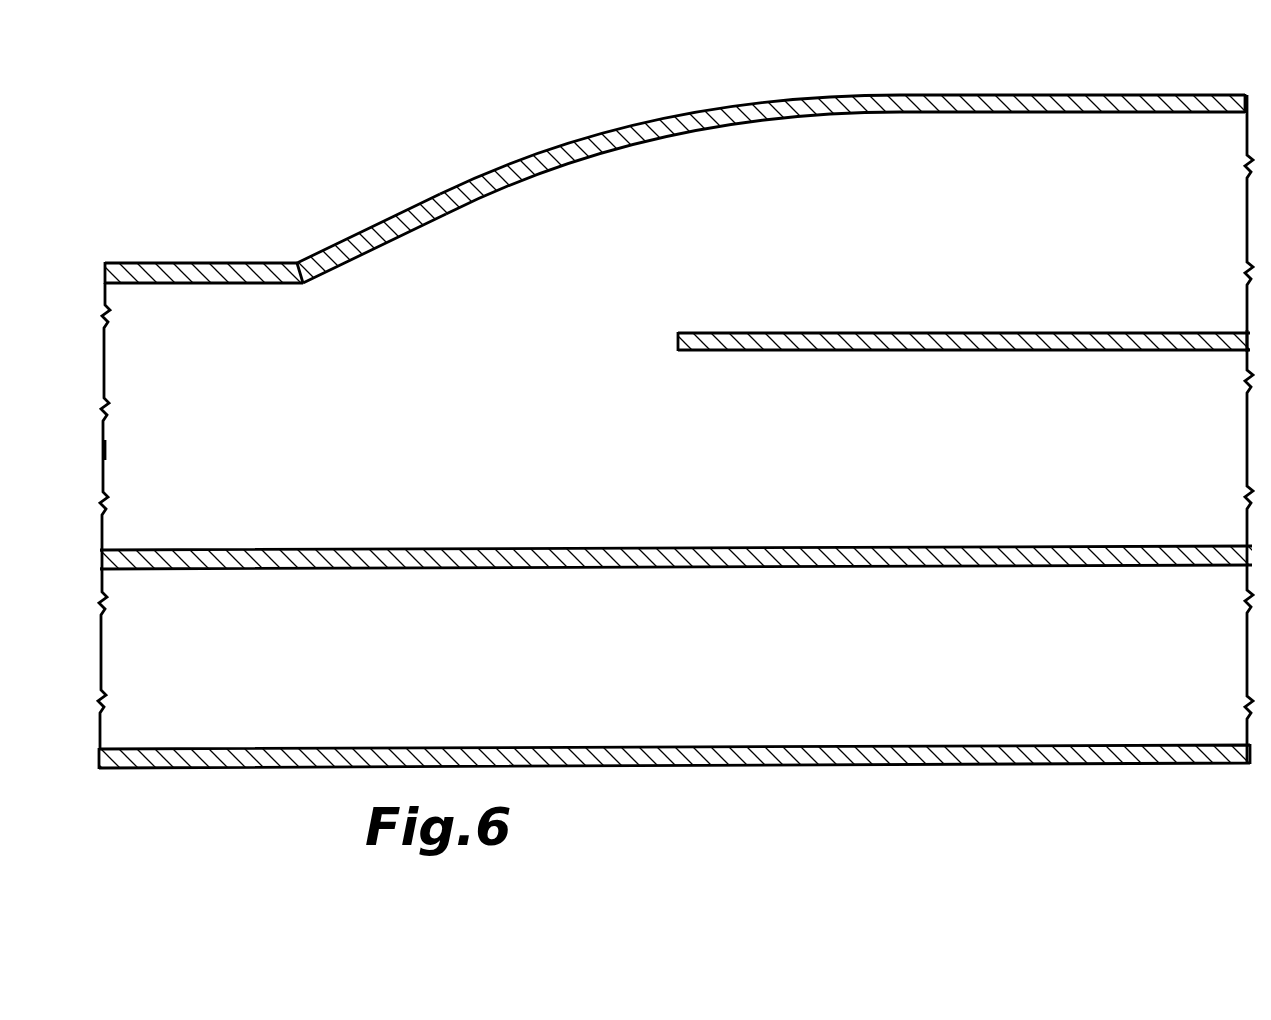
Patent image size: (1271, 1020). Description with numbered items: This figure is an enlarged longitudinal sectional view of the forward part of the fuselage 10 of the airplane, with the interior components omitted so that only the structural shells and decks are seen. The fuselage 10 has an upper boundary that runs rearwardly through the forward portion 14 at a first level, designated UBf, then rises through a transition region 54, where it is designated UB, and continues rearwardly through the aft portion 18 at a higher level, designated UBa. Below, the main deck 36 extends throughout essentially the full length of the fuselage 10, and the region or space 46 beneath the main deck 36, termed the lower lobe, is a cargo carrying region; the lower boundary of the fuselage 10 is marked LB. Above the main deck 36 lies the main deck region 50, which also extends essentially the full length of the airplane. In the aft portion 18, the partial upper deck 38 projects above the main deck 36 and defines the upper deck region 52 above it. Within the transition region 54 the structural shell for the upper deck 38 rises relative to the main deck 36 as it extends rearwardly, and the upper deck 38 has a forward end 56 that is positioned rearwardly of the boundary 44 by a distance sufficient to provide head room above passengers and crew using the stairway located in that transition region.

The fuselage 10 is at (671, 160).
The forward portion 14 is at (114, 259).
The aft portion 18 is at (1057, 92).
The main deck 36 is at (600, 546).
The partial upper deck 38 is at (924, 323).
The boundary 44 is at (300, 260).
The lower lobe 46 is at (708, 721).
The main deck region 50 is at (972, 366).
The upper deck region 52 is at (1158, 132).
The transition region 54 is at (510, 227).
The forward end 56 is at (676, 342).
The upper boundary in the forward portion UBf is at (258, 259).
The upper boundary in the transition region UB is at (623, 91).
The upper boundary in the aft portion UBa is at (942, 93).
The lower body LB is at (251, 771).